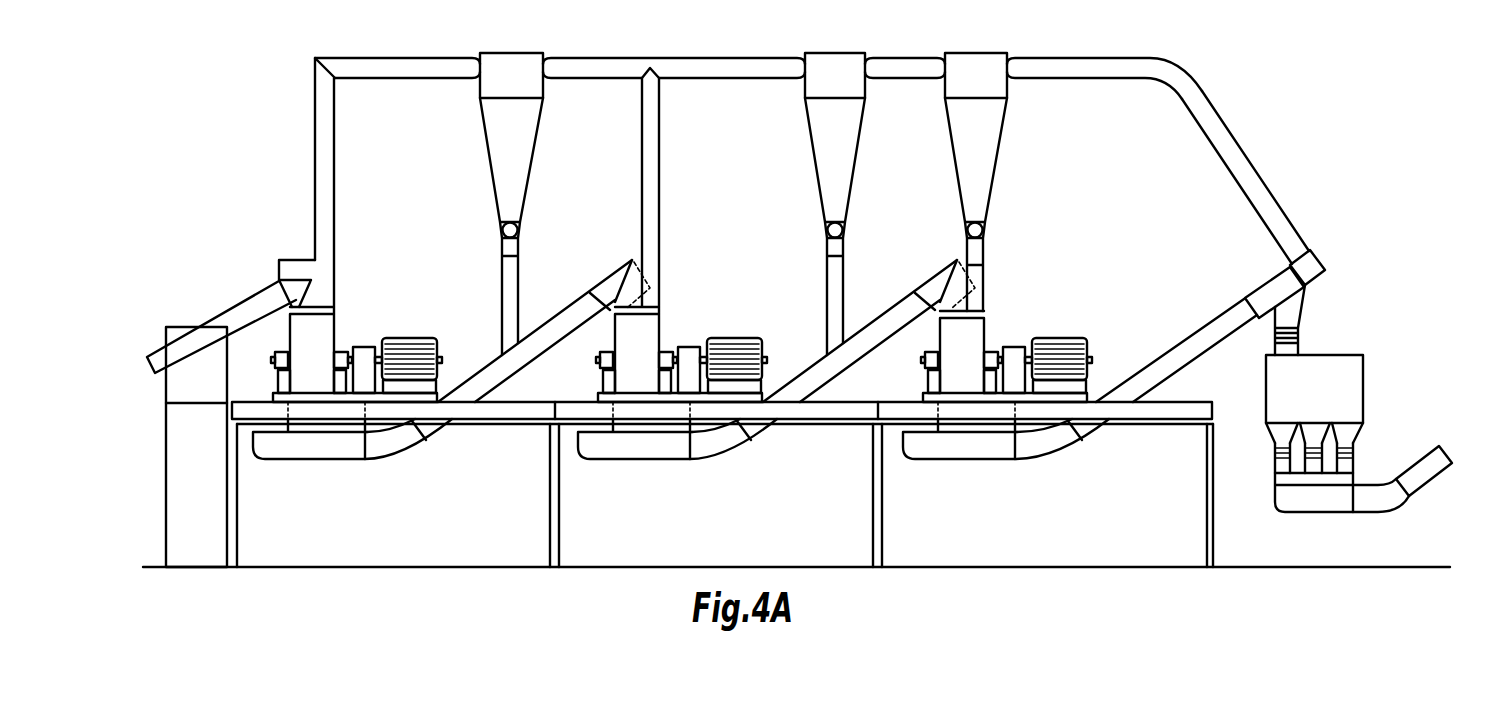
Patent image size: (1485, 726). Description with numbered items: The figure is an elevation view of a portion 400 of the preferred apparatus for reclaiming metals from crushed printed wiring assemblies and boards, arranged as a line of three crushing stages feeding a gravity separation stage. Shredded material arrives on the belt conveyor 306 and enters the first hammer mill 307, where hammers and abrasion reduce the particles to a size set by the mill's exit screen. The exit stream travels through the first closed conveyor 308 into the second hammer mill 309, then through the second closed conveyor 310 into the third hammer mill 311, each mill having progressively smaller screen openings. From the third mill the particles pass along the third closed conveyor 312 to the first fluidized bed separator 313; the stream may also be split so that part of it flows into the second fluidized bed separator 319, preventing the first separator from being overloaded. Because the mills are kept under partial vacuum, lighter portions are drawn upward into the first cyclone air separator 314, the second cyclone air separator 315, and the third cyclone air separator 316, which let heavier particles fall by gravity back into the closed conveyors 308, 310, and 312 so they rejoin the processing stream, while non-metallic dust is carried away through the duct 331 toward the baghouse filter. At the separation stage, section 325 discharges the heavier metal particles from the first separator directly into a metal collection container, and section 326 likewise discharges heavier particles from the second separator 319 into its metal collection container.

The portion of the preferred embodiment 400 is at (258, 108).
The belt conveyor 306 is at (240, 302).
The first hammer mill 307 is at (348, 310).
The first closed conveyor 308 is at (558, 312).
The second hammer mill 309 is at (672, 312).
The second closed conveyor 310 is at (882, 312).
The third hammer mill 311 is at (995, 316).
The third closed conveyor 312 is at (1207, 322).
The first fluidized bed separator 313 is at (1338, 358).
The first cyclone air separator 314 is at (527, 158).
The second cyclone air separator 315 is at (851, 160).
The third cyclone air separator 316 is at (993, 163).
The second fluidized bed separator 319 is at (1318, 352).
The section 325 is at (1315, 512).
The section 326 is at (1438, 487).
The duct 331 is at (1255, 168).